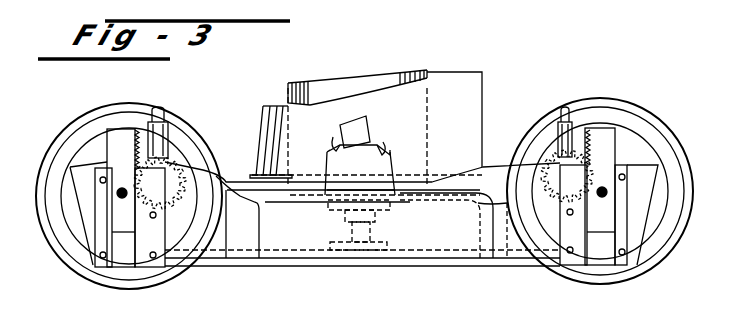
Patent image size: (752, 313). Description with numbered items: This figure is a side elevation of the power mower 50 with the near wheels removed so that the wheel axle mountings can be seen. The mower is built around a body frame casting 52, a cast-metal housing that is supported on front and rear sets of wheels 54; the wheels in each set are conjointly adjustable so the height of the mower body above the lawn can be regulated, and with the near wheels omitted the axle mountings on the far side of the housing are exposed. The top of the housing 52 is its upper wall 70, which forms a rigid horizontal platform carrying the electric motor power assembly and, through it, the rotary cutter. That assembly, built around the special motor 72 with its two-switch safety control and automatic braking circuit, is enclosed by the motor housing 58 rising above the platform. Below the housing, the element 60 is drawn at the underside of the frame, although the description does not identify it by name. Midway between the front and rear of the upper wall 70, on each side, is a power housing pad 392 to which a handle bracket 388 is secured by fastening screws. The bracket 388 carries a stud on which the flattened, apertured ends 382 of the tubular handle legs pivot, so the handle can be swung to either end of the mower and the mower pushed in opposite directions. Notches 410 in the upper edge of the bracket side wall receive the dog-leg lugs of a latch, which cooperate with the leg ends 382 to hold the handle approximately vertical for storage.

The power mower 50 is at (490, 72).
The body frame casting 52 is at (238, 259).
The wheels 54 is at (85, 116).
The motor housing 58 is at (272, 106).
The base plate 60 is at (298, 254).
The upper wall 70 is at (240, 182).
The motor 72 is at (367, 79).
The ends of legs 382 is at (360, 130).
The handle bracket 388 is at (388, 158).
The power housing pad 392 is at (330, 203).
The notches 410 is at (333, 147).